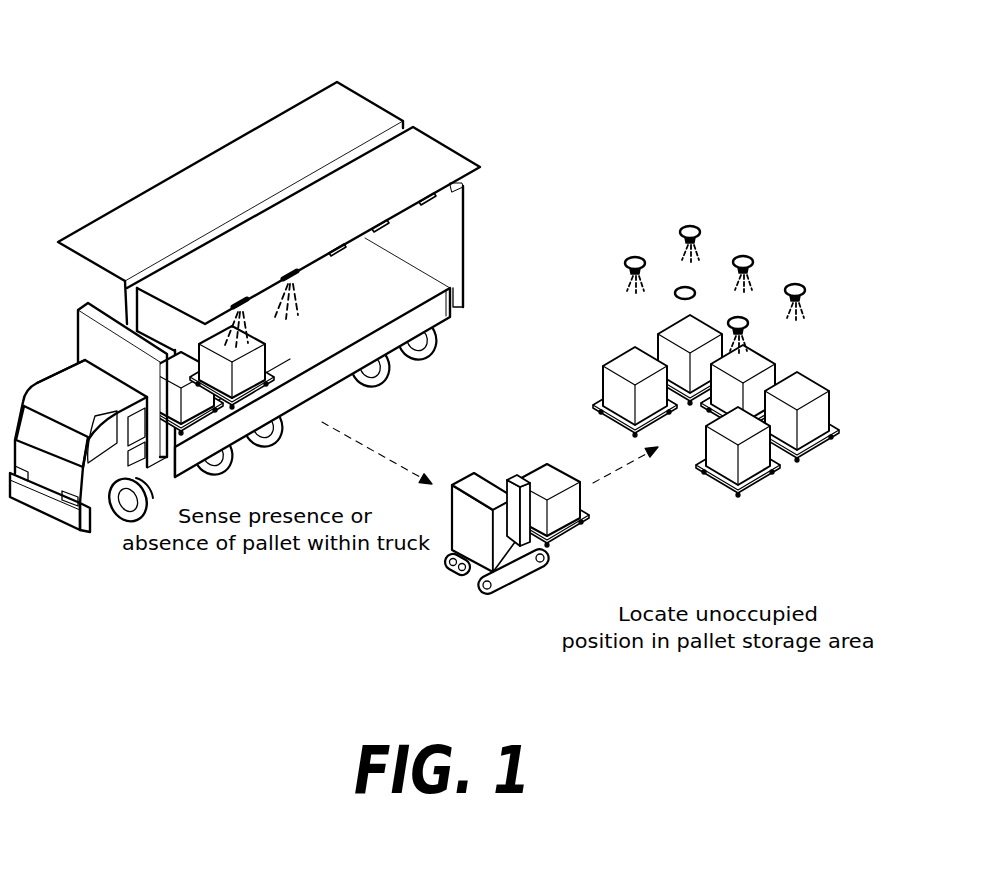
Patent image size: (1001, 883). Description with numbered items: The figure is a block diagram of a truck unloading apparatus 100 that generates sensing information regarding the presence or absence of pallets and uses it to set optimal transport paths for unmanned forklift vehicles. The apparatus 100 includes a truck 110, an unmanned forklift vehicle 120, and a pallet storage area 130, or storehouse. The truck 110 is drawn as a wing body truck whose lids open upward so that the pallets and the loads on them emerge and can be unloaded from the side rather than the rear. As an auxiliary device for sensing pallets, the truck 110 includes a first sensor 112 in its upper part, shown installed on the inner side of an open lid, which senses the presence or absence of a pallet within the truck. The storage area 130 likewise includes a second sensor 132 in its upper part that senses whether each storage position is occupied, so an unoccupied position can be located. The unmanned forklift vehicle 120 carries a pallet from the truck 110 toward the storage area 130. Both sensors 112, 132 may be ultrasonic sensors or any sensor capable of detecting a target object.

The truck unloading apparatus 100 is at (70, 33).
The truck 110 is at (60, 384).
The first sensor 112 is at (437, 198).
The unmanned forklift vehicle 120 is at (482, 485).
The pallet storage area 130 is at (677, 493).
The second sensor 132 is at (675, 297).